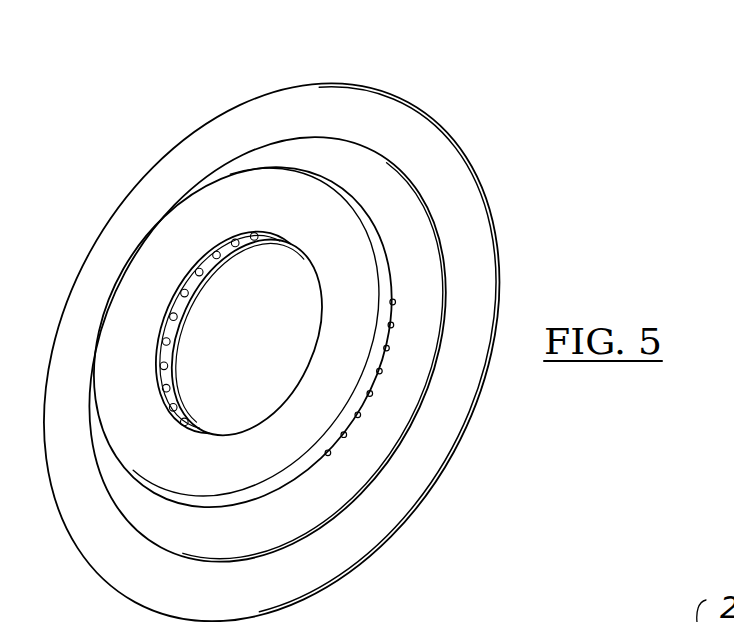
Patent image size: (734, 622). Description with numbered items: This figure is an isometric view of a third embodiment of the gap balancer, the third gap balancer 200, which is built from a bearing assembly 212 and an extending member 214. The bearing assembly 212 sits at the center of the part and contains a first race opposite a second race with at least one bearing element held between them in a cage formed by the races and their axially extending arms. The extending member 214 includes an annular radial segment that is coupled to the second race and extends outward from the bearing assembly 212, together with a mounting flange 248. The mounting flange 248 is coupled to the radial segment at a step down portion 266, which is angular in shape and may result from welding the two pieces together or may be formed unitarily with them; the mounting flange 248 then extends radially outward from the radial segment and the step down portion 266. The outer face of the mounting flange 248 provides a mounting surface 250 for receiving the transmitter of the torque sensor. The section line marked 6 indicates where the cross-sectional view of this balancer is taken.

The third gap balancer 200 is at (129, 133).
The bearing assembly 212 is at (186, 393).
The extending member 214 is at (402, 531).
The mounting flange 248 is at (447, 413).
The mounting surface 250 is at (472, 272).
The step down portion 266 is at (392, 459).
The section line 6- 6 is at (238, 42).